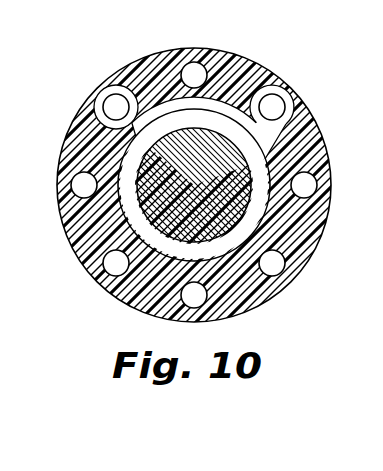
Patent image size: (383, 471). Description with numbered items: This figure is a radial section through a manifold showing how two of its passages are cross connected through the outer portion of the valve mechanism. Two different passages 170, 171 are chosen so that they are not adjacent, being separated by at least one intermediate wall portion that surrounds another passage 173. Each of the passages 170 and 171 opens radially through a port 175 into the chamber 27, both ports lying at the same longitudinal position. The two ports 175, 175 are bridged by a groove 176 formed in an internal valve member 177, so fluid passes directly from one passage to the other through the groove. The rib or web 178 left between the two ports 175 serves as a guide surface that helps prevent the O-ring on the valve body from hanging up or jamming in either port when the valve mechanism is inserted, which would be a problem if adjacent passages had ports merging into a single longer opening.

The chamber 27 is at (266, 229).
The passage 170 is at (112, 98).
The passage 171 is at (277, 96).
The passage 173 is at (209, 50).
The port 175 is at (110, 135).
The groove 176 is at (194, 185).
The internal valve member 177 is at (157, 193).
The rib or web 178 is at (243, 69).